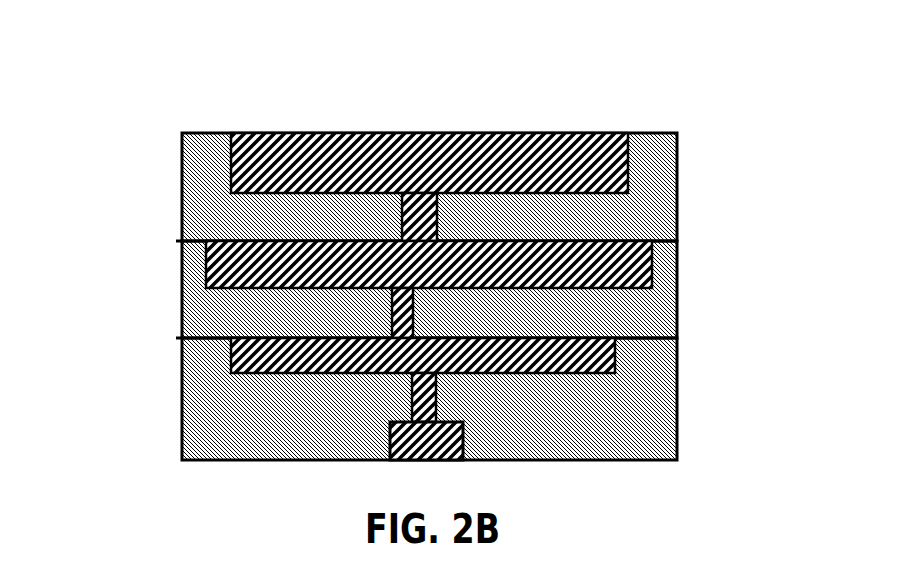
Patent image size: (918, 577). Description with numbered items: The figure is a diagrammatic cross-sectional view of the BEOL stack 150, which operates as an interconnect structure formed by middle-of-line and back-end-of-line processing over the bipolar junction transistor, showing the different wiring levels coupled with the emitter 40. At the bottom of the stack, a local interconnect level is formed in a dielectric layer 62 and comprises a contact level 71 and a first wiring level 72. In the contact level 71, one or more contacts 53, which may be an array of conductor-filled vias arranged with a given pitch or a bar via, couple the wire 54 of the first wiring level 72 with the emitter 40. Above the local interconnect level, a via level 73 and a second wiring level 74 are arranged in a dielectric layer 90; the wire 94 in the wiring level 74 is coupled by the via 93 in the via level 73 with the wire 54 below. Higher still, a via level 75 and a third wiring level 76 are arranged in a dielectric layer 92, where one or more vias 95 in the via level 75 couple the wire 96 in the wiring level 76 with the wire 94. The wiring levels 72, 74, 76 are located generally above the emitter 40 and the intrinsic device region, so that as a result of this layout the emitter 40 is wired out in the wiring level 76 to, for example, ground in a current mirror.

The BEOL stack 150 is at (446, 239).
The wire 96 is at (590, 163).
The via 95 is at (437, 210).
The dielectric layer 92 is at (613, 223).
The wire 94 is at (588, 262).
The via 93 is at (413, 297).
The dielectric layer 90 is at (613, 317).
The wire 54 is at (590, 360).
The contact 53 is at (436, 397).
The dielectric layer 62 is at (588, 426).
The emitter 40 is at (430, 445).
The wiring level 76 is at (136, 164).
The via level 75 is at (136, 226).
The wiring level 74 is at (141, 272).
The via level 73 is at (141, 322).
The wiring level 72 is at (141, 368).
The contact level 71 is at (141, 403).